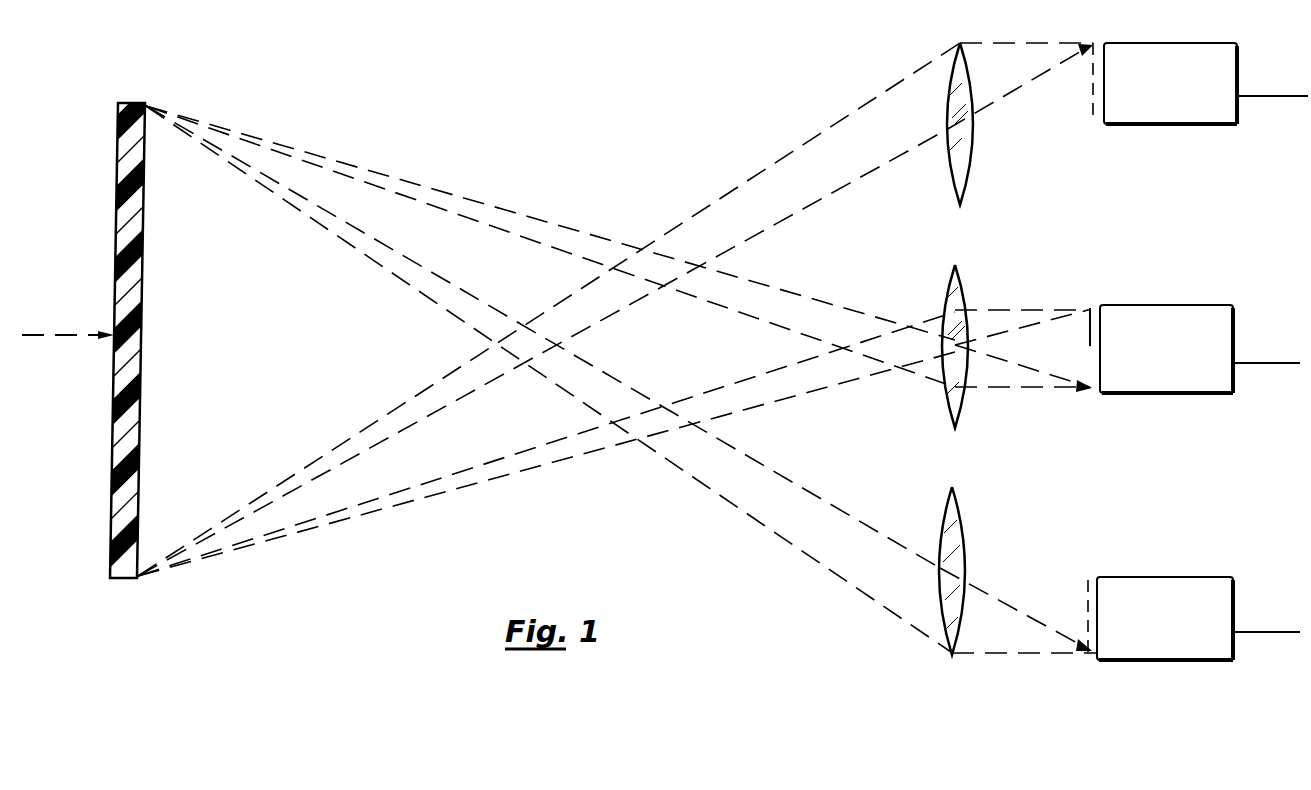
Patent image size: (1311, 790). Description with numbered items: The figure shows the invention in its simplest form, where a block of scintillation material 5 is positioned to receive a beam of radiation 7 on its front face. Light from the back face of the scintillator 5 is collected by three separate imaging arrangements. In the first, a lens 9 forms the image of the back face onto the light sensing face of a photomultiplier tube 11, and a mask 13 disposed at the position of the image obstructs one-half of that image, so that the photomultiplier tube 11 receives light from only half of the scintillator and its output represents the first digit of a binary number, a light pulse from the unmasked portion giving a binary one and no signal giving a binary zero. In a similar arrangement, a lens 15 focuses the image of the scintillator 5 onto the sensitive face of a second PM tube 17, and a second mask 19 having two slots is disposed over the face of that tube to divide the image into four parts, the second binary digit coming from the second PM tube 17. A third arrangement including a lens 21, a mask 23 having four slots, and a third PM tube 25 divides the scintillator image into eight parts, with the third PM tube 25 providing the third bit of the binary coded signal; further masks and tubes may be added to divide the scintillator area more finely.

The block of scintillation material 5 is at (140, 101).
The beam of radiation 7 is at (44, 335).
The lens 9 is at (963, 403).
The photomultiplier tube 11 is at (1200, 349).
The mask 13 is at (1088, 332).
The lens 15 is at (965, 545).
The second PM tube 17 is at (1198, 618).
The second mask 19 is at (1088, 588).
The lens 21 is at (973, 137).
The mask 23 is at (1093, 95).
The third PM tube 25 is at (1206, 83).